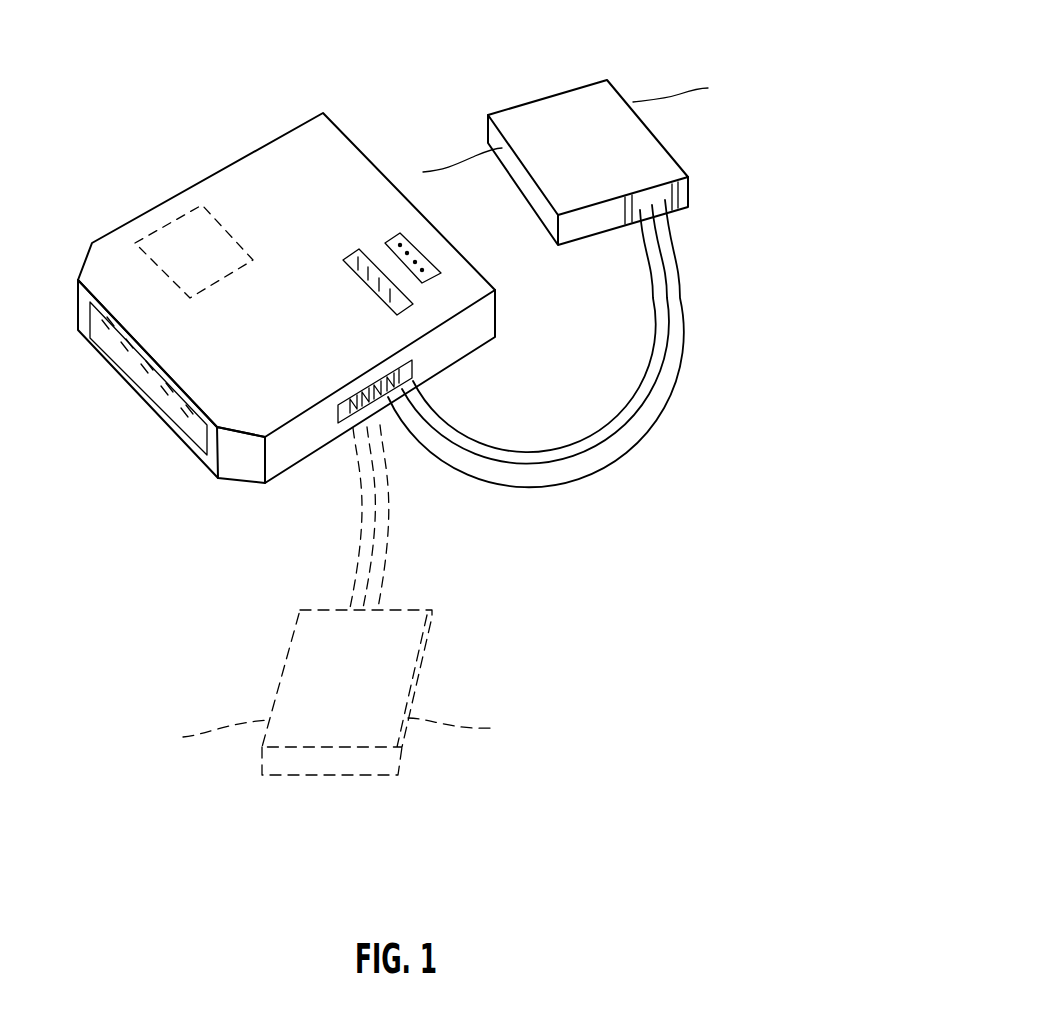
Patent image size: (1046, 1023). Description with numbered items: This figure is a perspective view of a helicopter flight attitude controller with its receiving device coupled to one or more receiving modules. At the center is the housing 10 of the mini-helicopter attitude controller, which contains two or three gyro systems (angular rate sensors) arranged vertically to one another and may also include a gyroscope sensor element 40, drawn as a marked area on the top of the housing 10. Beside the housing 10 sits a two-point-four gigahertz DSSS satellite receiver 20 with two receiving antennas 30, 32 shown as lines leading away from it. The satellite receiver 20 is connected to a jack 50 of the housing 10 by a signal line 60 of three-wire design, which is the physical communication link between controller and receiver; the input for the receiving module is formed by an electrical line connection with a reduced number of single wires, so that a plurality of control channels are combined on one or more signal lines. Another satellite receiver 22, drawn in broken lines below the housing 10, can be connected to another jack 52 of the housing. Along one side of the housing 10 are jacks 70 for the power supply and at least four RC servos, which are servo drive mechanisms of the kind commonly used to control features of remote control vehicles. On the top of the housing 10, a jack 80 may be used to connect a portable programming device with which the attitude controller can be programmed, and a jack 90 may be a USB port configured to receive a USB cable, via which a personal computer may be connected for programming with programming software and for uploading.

The housing 10 is at (287, 153).
The satellite receiver 20 is at (552, 113).
The satellite receiver 22 is at (318, 640).
The receiving antenna 30 is at (461, 160).
The receiving antenna 32 is at (667, 98).
The gyroscope sensor element 40 is at (183, 215).
The jack 50 is at (395, 378).
The jack 52 is at (347, 390).
The cable 60 is at (617, 417).
The jacks 70 is at (157, 397).
The jack 80 is at (413, 297).
The jack 90 is at (428, 262).